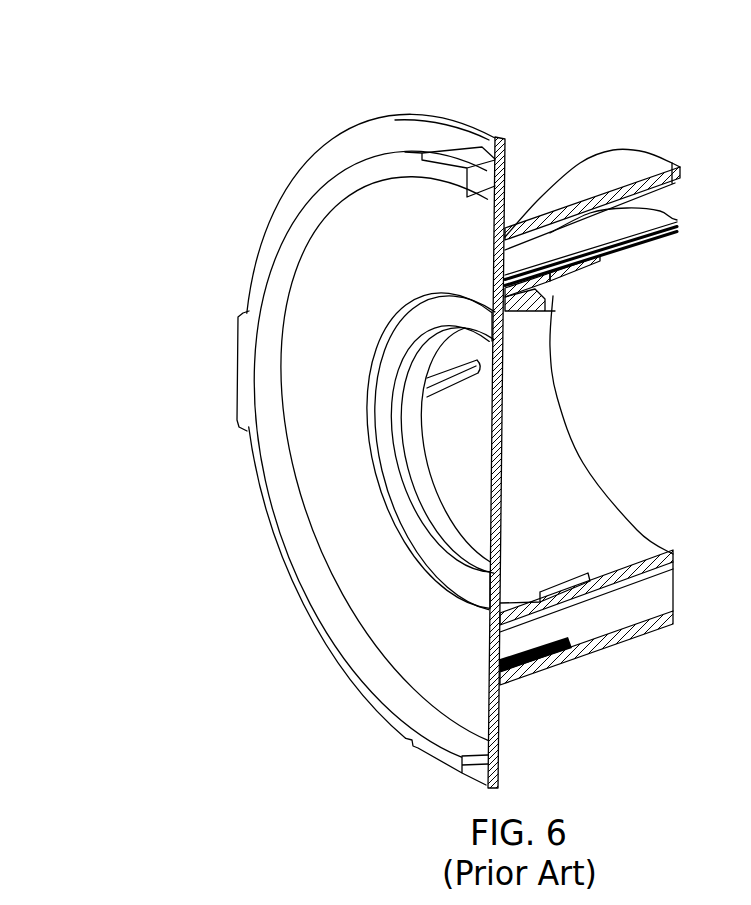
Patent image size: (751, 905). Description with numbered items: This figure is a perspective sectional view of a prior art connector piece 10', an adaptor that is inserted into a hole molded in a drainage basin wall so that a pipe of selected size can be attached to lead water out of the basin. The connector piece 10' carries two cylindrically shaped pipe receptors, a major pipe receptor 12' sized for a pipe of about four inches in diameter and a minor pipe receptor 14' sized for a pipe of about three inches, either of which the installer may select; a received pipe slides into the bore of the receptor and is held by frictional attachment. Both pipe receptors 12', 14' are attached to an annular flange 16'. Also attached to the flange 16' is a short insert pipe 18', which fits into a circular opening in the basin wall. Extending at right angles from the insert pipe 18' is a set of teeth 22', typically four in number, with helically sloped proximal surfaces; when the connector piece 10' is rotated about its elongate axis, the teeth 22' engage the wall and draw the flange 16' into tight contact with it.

The connector piece 10' is at (461, 443).
The major pipe receptor 12' is at (590, 392).
The minor pipe receptor 14' is at (589, 437).
The annular flange 16' is at (388, 459).
The insert pipe 18' is at (367, 435).
The teeth 22' is at (333, 446).